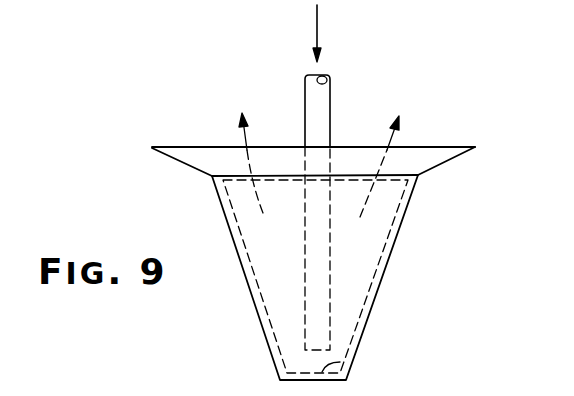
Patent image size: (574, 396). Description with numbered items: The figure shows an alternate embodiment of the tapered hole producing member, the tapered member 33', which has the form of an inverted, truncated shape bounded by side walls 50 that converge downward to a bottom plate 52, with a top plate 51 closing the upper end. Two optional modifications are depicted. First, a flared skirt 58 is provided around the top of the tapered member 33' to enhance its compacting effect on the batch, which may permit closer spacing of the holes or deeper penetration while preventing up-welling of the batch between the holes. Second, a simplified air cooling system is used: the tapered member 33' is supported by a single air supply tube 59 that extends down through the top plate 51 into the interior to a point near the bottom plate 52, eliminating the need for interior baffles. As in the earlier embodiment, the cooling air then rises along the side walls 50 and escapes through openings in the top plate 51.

The air supply tube 59 is at (330, 98).
The flared skirt 58 is at (437, 147).
The side walls 50 is at (373, 303).
The top plate 51 is at (400, 182).
The bottom plate 52 is at (340, 362).
The tapered member 33' is at (453, 250).